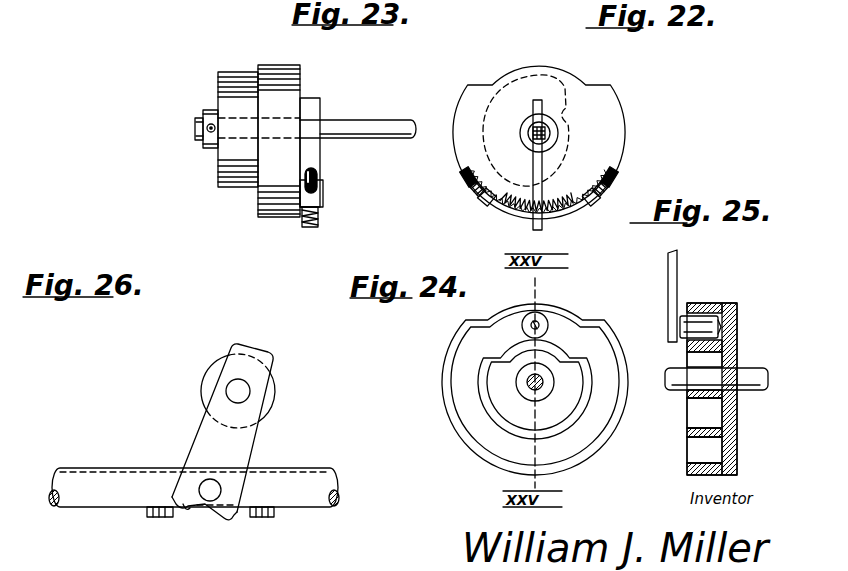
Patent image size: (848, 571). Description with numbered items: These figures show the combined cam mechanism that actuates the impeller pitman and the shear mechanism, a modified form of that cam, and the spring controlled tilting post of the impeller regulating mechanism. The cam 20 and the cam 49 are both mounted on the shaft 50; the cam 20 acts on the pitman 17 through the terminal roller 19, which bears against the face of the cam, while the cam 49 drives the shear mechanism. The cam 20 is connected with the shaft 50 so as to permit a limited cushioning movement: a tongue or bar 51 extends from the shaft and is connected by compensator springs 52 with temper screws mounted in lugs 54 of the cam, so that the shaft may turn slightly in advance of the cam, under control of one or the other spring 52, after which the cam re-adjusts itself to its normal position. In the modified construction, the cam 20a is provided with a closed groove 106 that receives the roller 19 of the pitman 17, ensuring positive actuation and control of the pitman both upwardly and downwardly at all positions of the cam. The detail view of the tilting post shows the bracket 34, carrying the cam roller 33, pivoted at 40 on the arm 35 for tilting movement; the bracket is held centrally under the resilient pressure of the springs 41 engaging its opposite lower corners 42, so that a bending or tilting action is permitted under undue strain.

In FIG. 25, the pitman 17 is at (672, 270).
In FIG. 24, the terminal roller 19 is at (546, 322).
In FIG. 25, the terminal roller 19 is at (701, 327).
In FIG. 23, the cam 20 is at (280, 77).
In FIG. 22, the cam 20 is at (610, 132).
In FIG. 24, the modified cam 20a is at (446, 393).
In FIG. 25, the modified cam 20a is at (738, 338).
In FIG. 26, the roller 33 is at (213, 373).
In FIG. 26, the bracket 34 is at (207, 438).
In FIG. 26, the arm 35 is at (194, 487).
In FIG. 26, the pivot 40 is at (221, 485).
In FIG. 26, the springs 41 is at (187, 512).
In FIG. 26, the lower corners 42 is at (167, 503).
In FIG. 23, the cam 49 is at (242, 157).
In FIG. 23, the shaft 50 is at (360, 128).
In FIG. 22, the shaft 50 is at (543, 128).
In FIG. 24, the shaft 50 is at (523, 380).
In FIG. 25, the shaft 50 is at (757, 380).
In FIG. 23, the tongue or bar 51 is at (312, 108).
In FIG. 22, the tongue or bar 51 is at (538, 163).
In FIG. 23, the compensator springs 52 is at (319, 215).
In FIG. 22, the compensator springs 52 is at (570, 212).
In FIG. 23, the lugs 54 is at (324, 190).
In FIG. 22, the lugs 54 is at (473, 183).
In FIG. 24, the closed groove 106 is at (587, 427).
In FIG. 25, the closed groove 106 is at (697, 446).